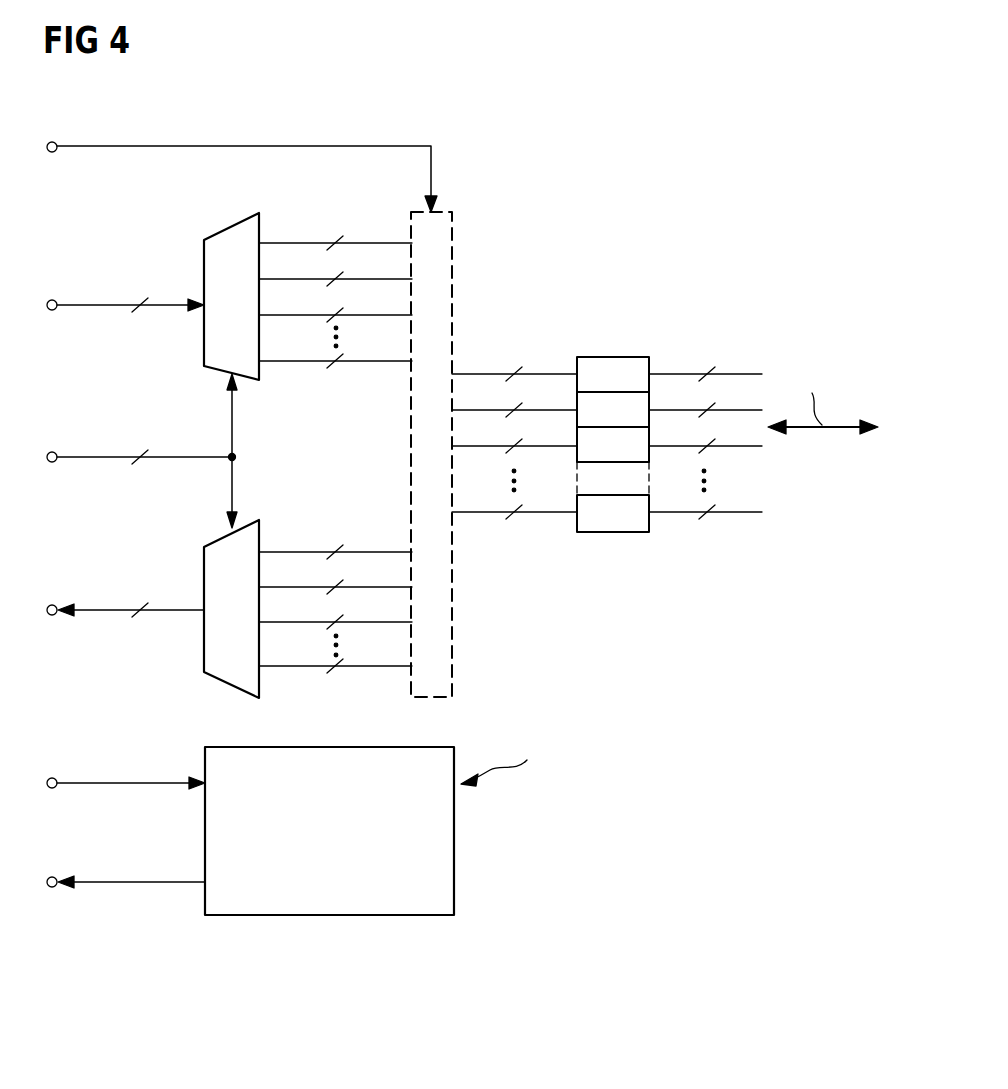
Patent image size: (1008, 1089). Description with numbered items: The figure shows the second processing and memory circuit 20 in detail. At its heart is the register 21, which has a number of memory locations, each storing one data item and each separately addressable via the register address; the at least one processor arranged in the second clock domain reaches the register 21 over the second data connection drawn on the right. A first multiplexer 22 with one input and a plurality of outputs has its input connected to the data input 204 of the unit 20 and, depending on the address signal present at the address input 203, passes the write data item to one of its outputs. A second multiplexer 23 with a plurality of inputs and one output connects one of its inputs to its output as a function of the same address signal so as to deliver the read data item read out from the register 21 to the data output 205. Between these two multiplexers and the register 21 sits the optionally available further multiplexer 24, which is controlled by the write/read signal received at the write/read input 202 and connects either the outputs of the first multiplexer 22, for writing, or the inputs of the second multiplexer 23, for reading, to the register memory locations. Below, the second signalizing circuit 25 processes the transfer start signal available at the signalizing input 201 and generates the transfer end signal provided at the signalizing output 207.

The second processing and memory circuit 20 is at (712, 124).
The register 21 is at (612, 356).
The first multiplexer 22 is at (226, 222).
The second multiplexer 23 is at (216, 537).
The further multiplexer 24 is at (452, 310).
The second signalizing circuit 25 is at (330, 917).
The signalizing input 201 is at (55, 789).
The write/read signal input 202 is at (55, 153).
The address input 203 is at (55, 463).
The data input 204 is at (55, 311).
The data output 205 is at (55, 616).
The signalizing output 207 is at (55, 888).